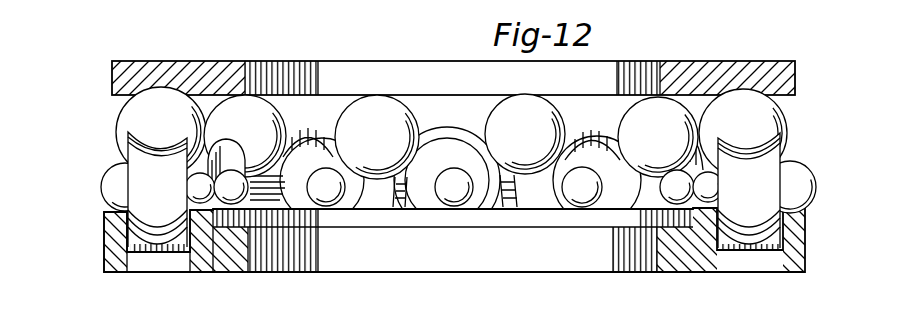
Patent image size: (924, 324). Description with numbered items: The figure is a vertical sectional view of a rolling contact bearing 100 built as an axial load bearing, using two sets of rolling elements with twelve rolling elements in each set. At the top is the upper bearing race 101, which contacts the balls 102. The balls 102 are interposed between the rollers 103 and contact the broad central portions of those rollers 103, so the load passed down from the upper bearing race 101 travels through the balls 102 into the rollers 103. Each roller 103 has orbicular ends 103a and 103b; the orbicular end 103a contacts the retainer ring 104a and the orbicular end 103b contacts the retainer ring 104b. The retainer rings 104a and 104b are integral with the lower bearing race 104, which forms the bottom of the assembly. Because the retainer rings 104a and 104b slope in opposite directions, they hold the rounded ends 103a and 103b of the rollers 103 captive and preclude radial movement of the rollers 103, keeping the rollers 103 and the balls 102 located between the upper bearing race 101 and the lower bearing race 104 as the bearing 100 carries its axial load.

The rolling contact bearing 100 is at (372, 53).
The upper bearing race 101 is at (112, 72).
The balls 102 is at (173, 118).
The rollers 103 is at (167, 188).
The orbicular end 103a is at (108, 168).
The orbicular end 103b is at (577, 206).
The lower bearing race 104 is at (402, 255).
The retainer ring 104a is at (115, 226).
The retainer ring 104b is at (212, 212).